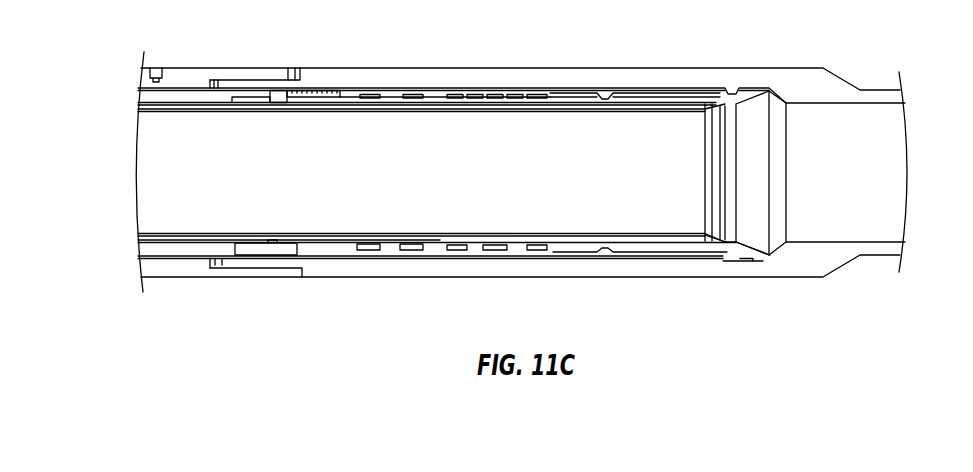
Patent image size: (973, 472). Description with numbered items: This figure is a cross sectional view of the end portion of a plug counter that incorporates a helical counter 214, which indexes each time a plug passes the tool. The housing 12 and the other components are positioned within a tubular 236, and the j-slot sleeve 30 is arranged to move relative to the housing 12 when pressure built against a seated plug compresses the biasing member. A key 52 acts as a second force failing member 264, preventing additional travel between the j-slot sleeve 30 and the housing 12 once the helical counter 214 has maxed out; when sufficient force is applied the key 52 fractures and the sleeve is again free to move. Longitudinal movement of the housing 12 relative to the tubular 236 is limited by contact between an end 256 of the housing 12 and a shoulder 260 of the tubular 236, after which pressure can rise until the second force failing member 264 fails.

The helical counter arrangement 214 is at (527, 66).
The tubular 236 is at (648, 68).
The housing 12 is at (735, 90).
The key 52 is at (262, 107).
The second force failing member 264 is at (302, 105).
The j-slot sleeve 30 is at (594, 234).
The shoulder 260 is at (770, 250).
The end 256 is at (768, 252).